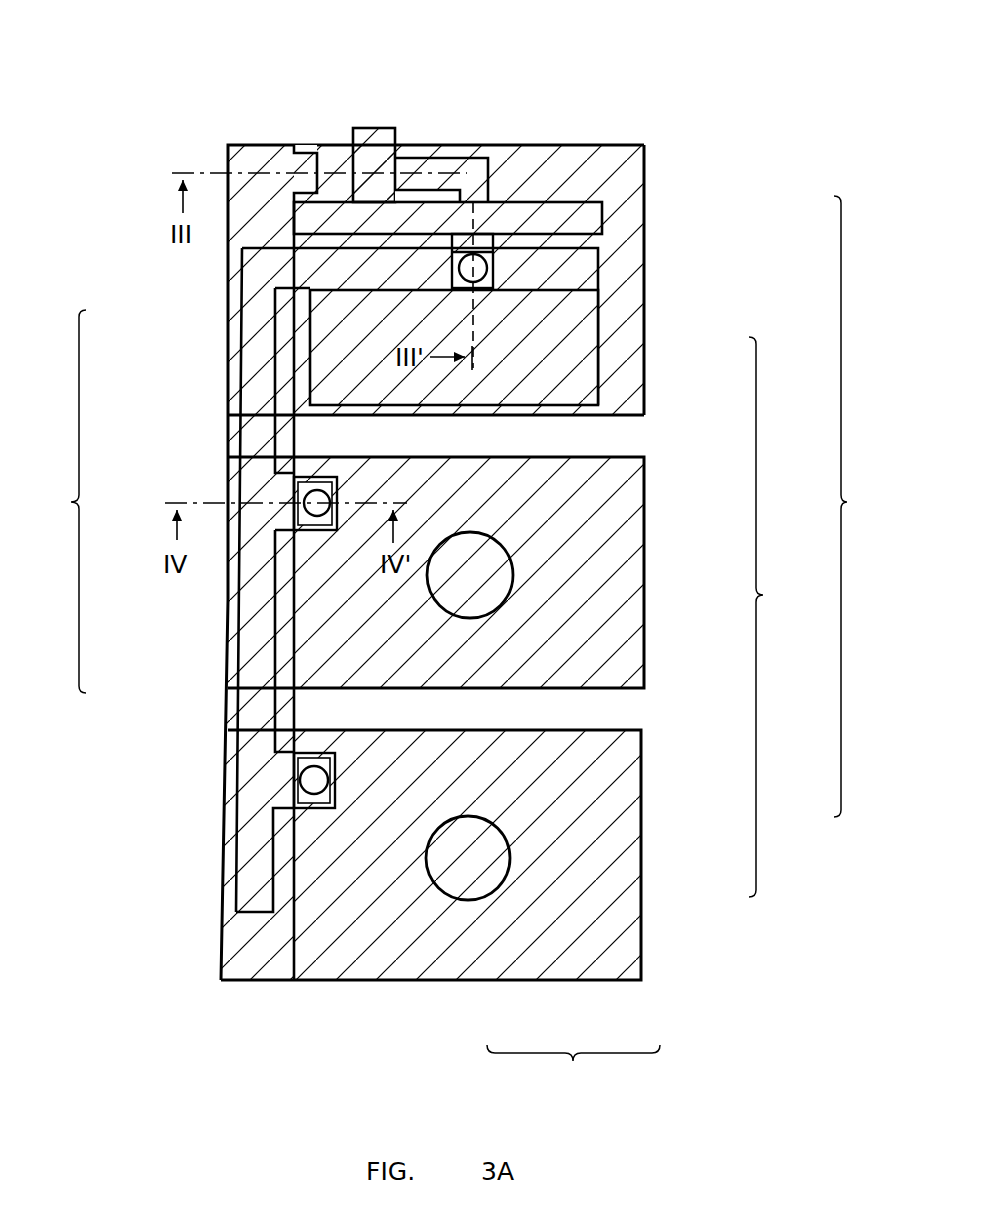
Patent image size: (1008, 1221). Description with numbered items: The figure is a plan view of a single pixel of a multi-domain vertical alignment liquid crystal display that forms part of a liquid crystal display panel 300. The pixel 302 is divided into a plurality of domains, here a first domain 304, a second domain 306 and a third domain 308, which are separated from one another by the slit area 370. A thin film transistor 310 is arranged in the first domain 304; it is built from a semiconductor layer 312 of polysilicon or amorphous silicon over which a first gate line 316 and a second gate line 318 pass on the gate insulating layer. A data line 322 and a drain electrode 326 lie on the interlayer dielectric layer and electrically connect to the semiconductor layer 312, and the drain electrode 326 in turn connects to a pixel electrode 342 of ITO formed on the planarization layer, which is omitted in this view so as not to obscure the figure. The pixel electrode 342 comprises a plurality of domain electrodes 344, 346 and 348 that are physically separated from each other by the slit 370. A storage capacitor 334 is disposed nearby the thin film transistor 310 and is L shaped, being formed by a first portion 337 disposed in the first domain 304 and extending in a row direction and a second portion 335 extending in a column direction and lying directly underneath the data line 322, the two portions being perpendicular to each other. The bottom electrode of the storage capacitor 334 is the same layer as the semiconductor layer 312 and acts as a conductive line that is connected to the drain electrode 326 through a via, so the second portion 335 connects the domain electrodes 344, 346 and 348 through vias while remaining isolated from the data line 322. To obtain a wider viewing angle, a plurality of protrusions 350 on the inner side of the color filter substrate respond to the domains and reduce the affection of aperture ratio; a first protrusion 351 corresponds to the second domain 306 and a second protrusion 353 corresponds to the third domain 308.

The liquid crystal display panel 300 is at (97, 58).
The pixel 302 is at (620, 130).
The first domain 304 is at (646, 217).
The second domain 306 is at (645, 510).
The third domain 308 is at (642, 803).
The thin film transistor 310 is at (412, 136).
The semiconductor layer 312 is at (470, 165).
The first gate line 316 is at (372, 152).
The second gate line 318 is at (583, 218).
The data line 322 is at (228, 273).
The drain electrode 326 is at (495, 265).
The storage capacitor 334 is at (167, 520).
The second portion of the storage capacitor 335 is at (241, 709).
The first portion of the storage capacitor 337 is at (600, 257).
The pixel electrode 342 is at (784, 617).
The domain electrode 344 is at (583, 343).
The domain electrode 346 is at (590, 586).
The domain electrode 348 is at (610, 886).
The protrusions 350 is at (573, 1069).
The first protrusion 351 is at (493, 592).
The second protrusion 353 is at (472, 878).
The slit area 370 is at (583, 428).